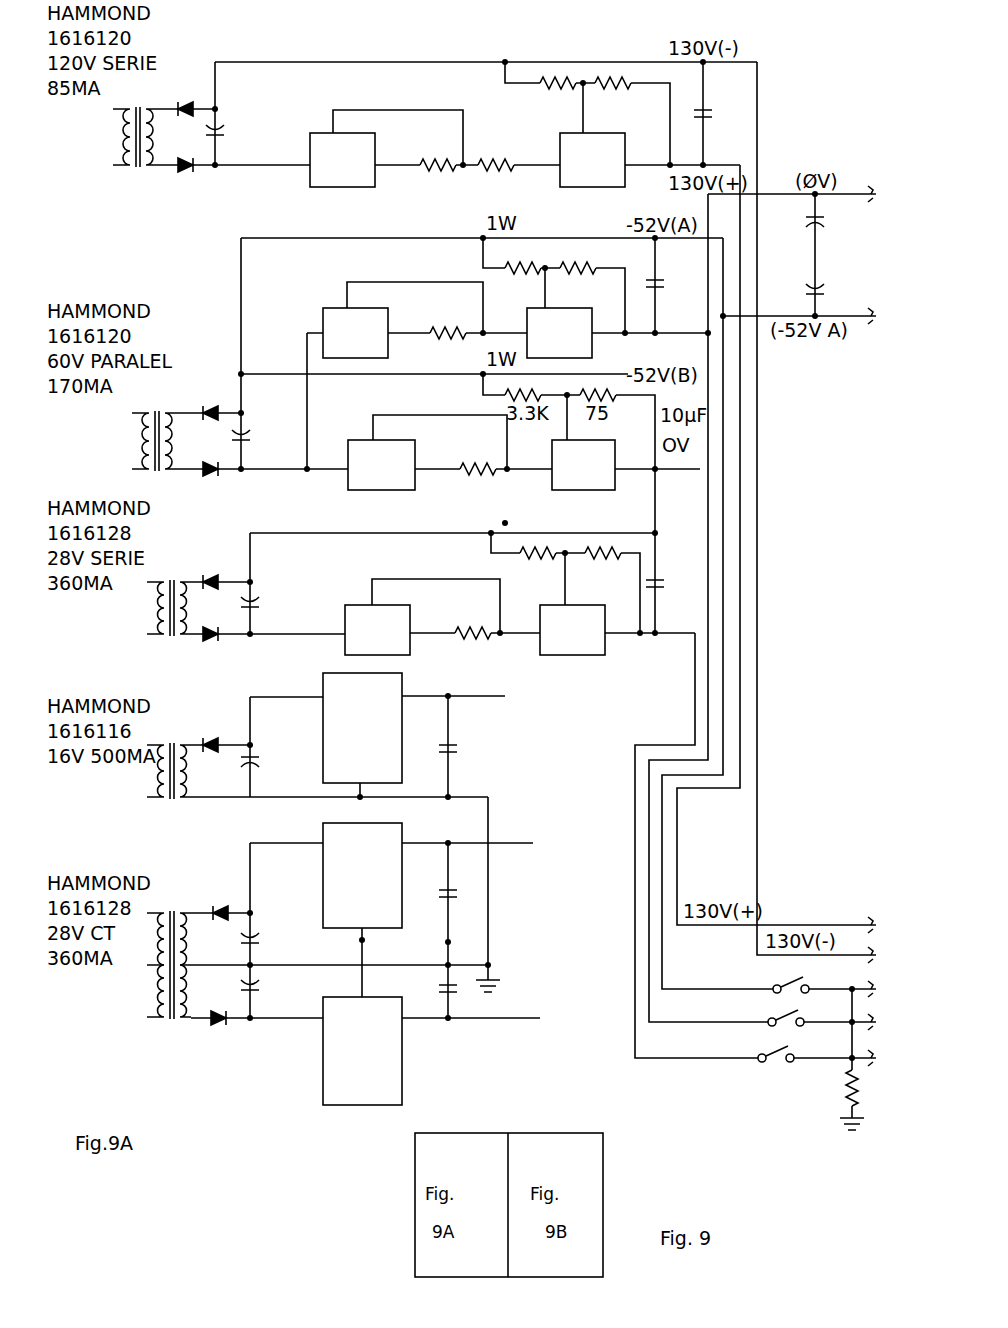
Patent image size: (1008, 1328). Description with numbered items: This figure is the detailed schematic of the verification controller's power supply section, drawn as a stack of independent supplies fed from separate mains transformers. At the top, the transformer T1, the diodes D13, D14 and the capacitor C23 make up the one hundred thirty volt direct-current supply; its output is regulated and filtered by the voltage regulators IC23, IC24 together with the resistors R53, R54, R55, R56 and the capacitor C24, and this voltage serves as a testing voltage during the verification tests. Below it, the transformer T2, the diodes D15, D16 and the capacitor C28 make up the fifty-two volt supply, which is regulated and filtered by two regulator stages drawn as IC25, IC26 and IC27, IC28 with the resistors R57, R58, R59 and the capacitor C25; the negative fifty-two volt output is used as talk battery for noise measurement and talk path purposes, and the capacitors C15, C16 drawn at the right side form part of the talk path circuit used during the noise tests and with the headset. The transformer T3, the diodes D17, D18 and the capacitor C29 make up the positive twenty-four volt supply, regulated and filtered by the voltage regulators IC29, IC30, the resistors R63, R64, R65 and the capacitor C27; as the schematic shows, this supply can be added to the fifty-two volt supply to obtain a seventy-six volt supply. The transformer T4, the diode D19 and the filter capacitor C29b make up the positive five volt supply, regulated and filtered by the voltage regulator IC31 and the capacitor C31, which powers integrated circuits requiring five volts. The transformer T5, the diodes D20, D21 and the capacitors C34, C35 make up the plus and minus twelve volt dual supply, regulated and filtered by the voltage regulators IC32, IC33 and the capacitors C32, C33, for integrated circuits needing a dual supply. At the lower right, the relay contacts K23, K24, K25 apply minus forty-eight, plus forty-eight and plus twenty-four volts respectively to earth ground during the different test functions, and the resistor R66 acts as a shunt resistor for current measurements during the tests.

The transformer T1 is at (103, 137).
The transformer T2 is at (112, 441).
The transformer T3 is at (121, 608).
The transformer T4 is at (120, 771).
The transformer T5 is at (122, 965).
The diode D13 is at (184, 106).
The diode D14 is at (230, 161).
The diode D15 is at (205, 414).
The diode D16 is at (258, 467).
The diode D17 is at (217, 579).
The diode D18 is at (264, 630).
The diode D19 is at (217, 727).
The diode D20 is at (257, 1030).
The diode D21 is at (220, 898).
The capacitor C23 is at (243, 115).
The capacitor C24 is at (724, 113).
The capacitor C25 is at (676, 287).
The capacitor C27 is at (679, 578).
The capacitor C28 is at (270, 433).
The capacitor C29 is at (279, 600).
The filter capacitor 100uF 50V (second C29) C29b is at (258, 765).
The capacitor C31 is at (467, 746).
The capacitor C32 is at (432, 905).
The capacitor C33 is at (432, 993).
The capacitor C34 is at (256, 933).
The capacitor C35 is at (260, 988).
The capacitor C15 is at (809, 225).
The capacitor C16 is at (809, 284).
The voltage regulator IC23 is at (368, 148).
The voltage regulator IC24 is at (633, 133).
The voltage regulator TL783 IC25 is at (389, 377).
The voltage regulator TL783 IC26 is at (602, 313).
The voltage regulator IC27 is at (432, 454).
The voltage regulator IC28 is at (607, 455).
The voltage regulator IC29 is at (407, 617).
The voltage regulator IC30 is at (601, 604).
The voltage regulator IC31 is at (442, 735).
The voltage regulator IC32 is at (469, 907).
The voltage regulator IC33 is at (473, 1041).
The resistor R53 is at (426, 161).
The resistor R54 is at (517, 170).
The resistor R55 is at (556, 69).
The resistor R56 is at (634, 111).
The resistor R57 is at (457, 328).
The resistor R58 is at (521, 266).
The resistor R59 is at (594, 286).
The resistor R63 is at (475, 630).
The resistor R64 is at (538, 562).
The resistor R65 is at (614, 580).
The shunt resistor R66 is at (823, 1059).
The relay K23 is at (774, 976).
The relay K24 is at (768, 1010).
The relay K25 is at (759, 1046).